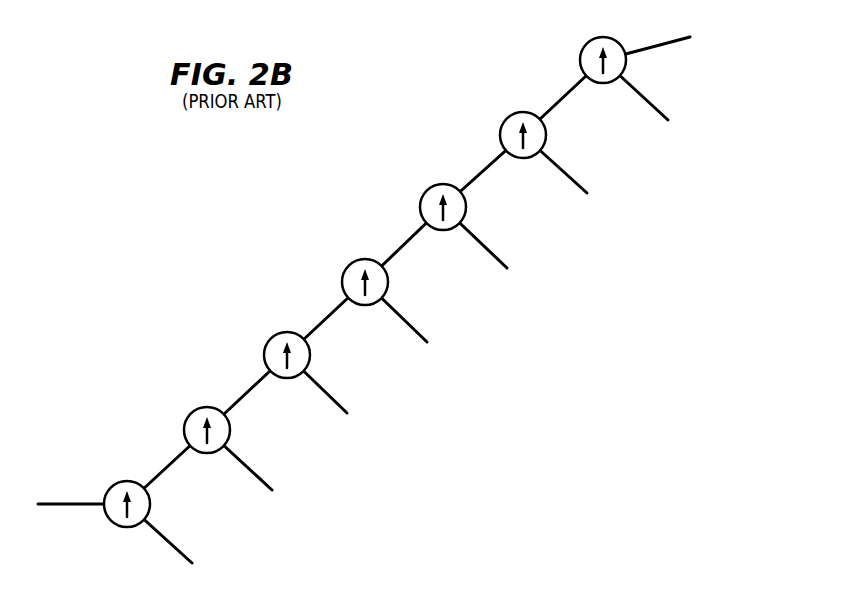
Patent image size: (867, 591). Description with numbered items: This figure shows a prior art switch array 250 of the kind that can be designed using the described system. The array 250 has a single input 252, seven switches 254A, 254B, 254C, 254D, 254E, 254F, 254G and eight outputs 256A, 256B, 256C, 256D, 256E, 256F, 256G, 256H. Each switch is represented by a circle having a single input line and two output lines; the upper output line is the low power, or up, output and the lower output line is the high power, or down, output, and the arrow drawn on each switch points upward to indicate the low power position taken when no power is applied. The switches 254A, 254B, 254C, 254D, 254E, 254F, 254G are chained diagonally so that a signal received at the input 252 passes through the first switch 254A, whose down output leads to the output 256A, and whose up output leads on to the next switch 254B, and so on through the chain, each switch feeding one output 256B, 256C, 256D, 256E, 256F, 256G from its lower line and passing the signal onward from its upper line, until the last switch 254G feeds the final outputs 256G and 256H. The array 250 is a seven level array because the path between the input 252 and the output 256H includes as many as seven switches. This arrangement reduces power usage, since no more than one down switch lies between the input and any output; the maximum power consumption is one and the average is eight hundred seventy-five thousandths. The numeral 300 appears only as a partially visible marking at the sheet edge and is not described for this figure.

The switch array 250 is at (180, 186).
The input 252 is at (75, 507).
The switch 254A is at (110, 488).
The switch 254B is at (190, 414).
The switch 254C is at (270, 339).
The switch 254D is at (348, 266).
The switch 254E is at (426, 191).
The switch 254F is at (506, 119).
The switch 254G is at (586, 44).
The output 256A is at (179, 547).
The output 256B is at (259, 474).
The output 256C is at (334, 397).
The output 256D is at (414, 326).
The output 256E is at (494, 252).
The output 256F is at (574, 177).
The output 256G is at (655, 104).
The output 256H is at (667, 40).
The structure of following figure (partially visible) 300 is at (713, 590).